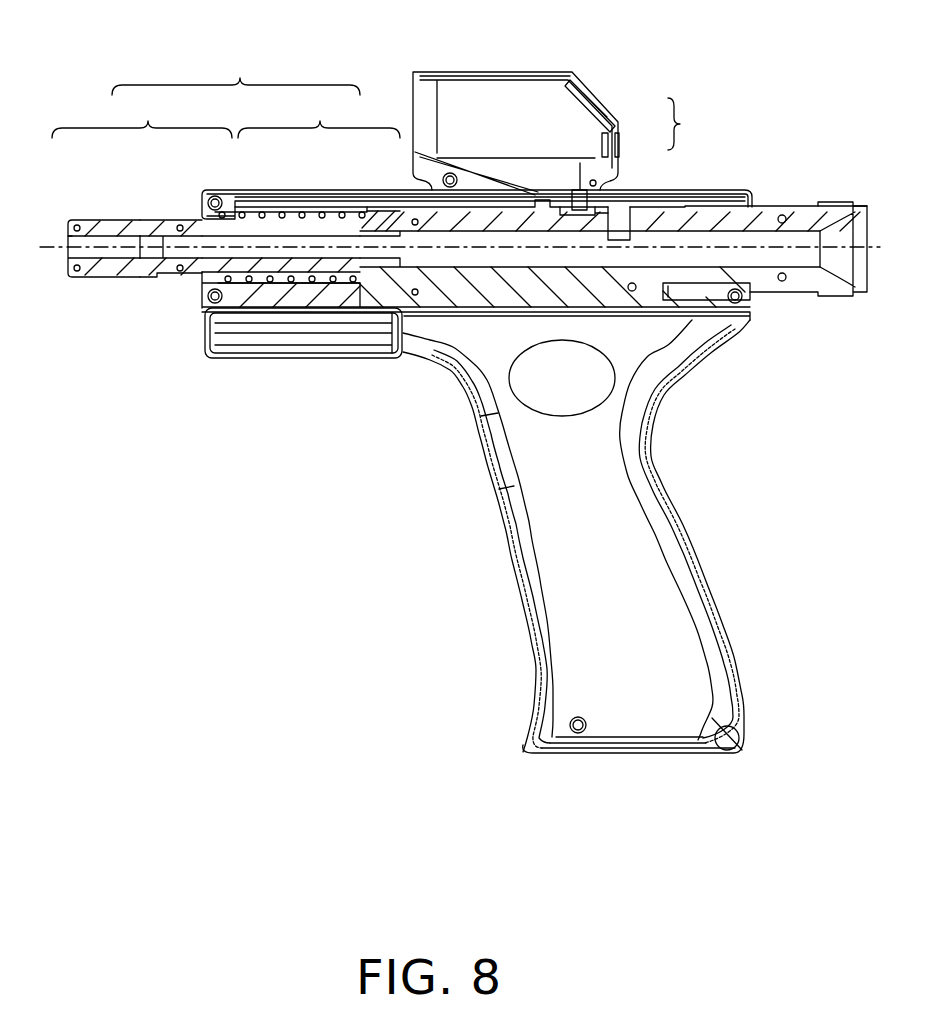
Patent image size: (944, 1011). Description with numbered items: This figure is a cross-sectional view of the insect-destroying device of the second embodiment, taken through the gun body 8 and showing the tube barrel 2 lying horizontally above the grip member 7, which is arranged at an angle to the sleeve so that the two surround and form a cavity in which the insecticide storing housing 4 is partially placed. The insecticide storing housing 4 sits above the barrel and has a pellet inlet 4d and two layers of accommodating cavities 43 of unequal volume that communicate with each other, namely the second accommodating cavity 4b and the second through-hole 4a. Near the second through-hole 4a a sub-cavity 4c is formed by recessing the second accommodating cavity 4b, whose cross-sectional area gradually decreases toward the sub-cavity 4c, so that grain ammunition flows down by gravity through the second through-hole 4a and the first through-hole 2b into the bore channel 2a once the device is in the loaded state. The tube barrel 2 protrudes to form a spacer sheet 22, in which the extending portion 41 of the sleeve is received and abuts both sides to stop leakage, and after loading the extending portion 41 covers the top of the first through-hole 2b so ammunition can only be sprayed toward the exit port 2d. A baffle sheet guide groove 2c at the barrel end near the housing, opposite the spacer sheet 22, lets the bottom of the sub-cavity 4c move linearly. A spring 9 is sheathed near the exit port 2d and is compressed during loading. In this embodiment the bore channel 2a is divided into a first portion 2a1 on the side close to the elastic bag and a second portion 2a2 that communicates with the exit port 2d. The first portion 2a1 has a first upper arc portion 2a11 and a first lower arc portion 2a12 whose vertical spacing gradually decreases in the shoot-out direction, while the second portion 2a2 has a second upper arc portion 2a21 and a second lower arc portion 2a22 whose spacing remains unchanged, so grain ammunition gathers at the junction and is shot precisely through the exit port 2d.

The tube barrel 2 is at (800, 212).
The bore channel 2a is at (489, 132).
The first portion 2a1 is at (529, 177).
The second portion 2a2 is at (206, 179).
The first upper arc portion 2a11 is at (357, 223).
The first lower arc portion 2a12 is at (297, 218).
The second upper arc portion 2a21 is at (145, 225).
The second lower arc portion 2a22 is at (101, 248).
The first through-hole 2b is at (745, 288).
The baffle sheet guide groove 2c is at (563, 200).
The exit port 2d is at (66, 252).
The insecticide storing housing 4 is at (430, 70).
The second through-hole 4a is at (591, 210).
The second accommodating cavity 4b is at (606, 138).
The sub-cavity 4c is at (621, 144).
The pellet inlet 4d is at (472, 78).
The extending portion 41 is at (612, 217).
The two layers of accommodating cavities 43 is at (689, 124).
The spacer sheet 22 is at (688, 210).
The grip member 7 is at (690, 512).
The gun body 8 is at (300, 333).
The spring 9 is at (242, 280).